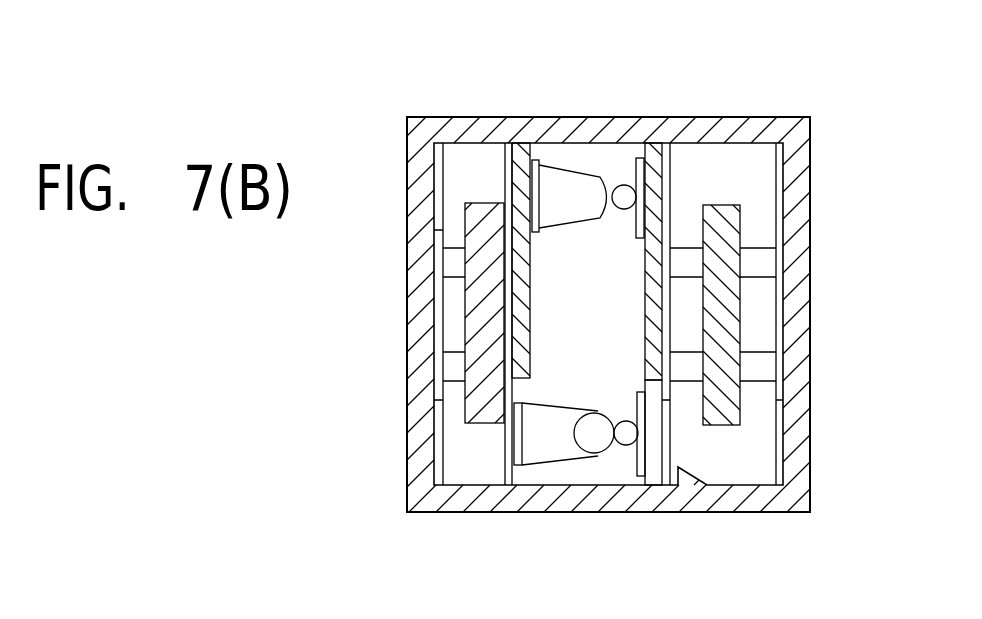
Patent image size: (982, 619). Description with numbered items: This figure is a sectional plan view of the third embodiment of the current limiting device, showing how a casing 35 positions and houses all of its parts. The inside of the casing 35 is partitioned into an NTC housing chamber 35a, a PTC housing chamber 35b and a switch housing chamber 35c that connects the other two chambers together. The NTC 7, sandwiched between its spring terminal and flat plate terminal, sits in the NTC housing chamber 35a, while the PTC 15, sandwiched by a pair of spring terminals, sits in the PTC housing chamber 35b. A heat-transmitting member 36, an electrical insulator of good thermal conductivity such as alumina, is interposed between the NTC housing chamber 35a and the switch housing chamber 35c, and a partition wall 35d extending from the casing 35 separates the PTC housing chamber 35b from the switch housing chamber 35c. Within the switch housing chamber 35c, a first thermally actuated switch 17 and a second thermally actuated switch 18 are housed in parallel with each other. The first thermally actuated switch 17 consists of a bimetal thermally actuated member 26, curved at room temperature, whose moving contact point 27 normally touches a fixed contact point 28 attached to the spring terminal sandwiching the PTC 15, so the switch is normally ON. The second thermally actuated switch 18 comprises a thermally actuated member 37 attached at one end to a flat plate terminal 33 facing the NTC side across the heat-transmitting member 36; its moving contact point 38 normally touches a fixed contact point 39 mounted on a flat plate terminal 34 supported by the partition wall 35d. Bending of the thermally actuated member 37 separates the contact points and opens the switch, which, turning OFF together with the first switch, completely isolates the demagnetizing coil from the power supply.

The NTC 7 is at (467, 318).
The PTC 15 is at (728, 312).
The first thermally actuated switch 17 is at (653, 567).
The second thermally actuated switch 18 is at (517, 58).
The thermally actuated member 26 is at (553, 453).
The moving contact point 27 is at (601, 452).
The fixed contact point 28 is at (623, 452).
The flat plate terminal 33 is at (540, 232).
The flat plate terminal 34 is at (641, 158).
The casing 35 is at (810, 397).
The NTC housing chamber 35a is at (457, 148).
The PTC housing chamber 35b is at (735, 155).
The switch housing chamber 35c is at (560, 386).
The partition wall 35d is at (643, 357).
The heat-transmitting member 36 is at (531, 358).
The thermally actuated member 37 is at (565, 171).
The moving contact point 38 is at (608, 182).
The fixed contact point 39 is at (622, 185).